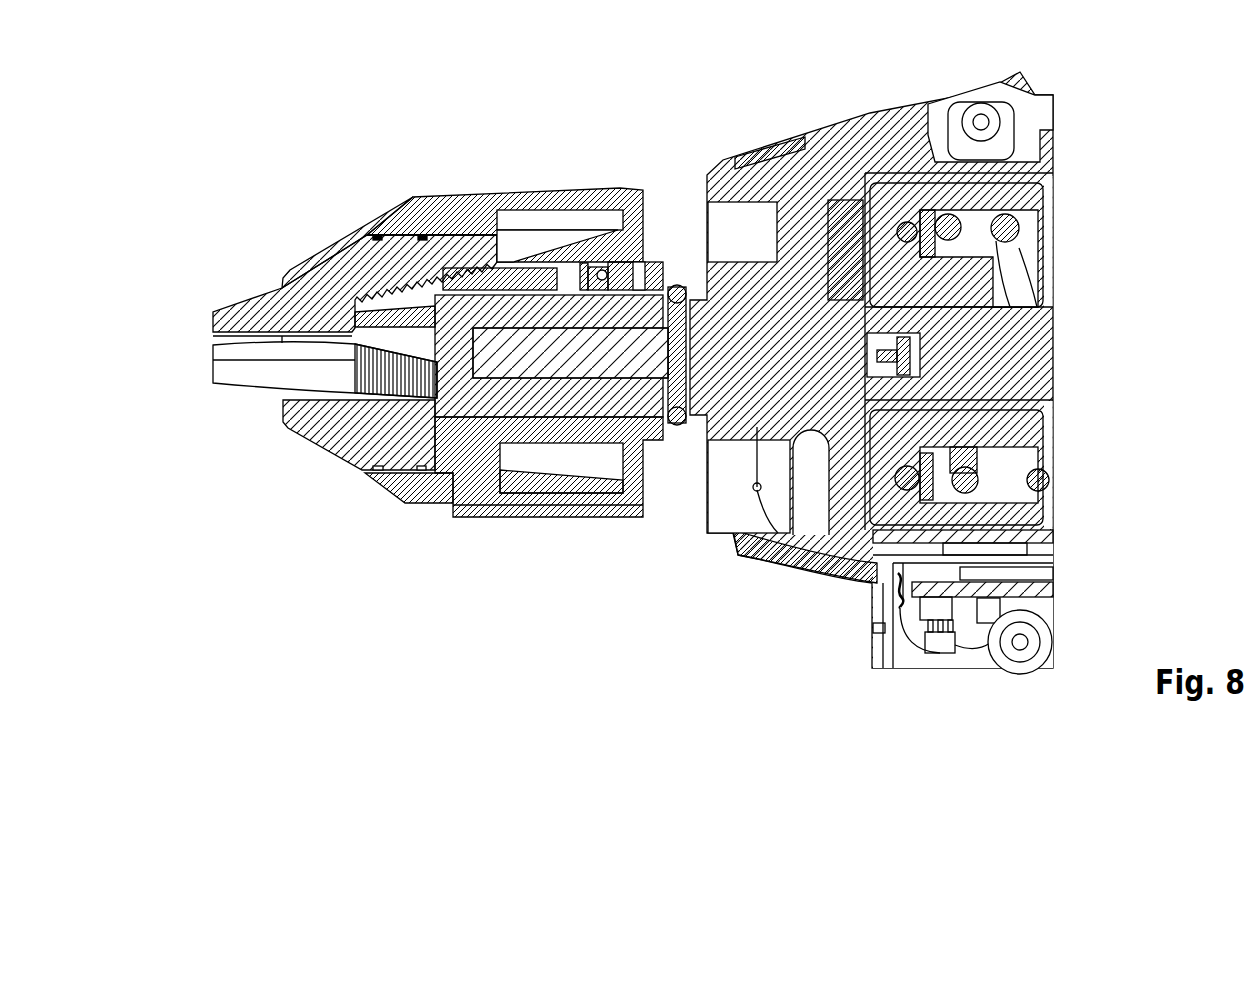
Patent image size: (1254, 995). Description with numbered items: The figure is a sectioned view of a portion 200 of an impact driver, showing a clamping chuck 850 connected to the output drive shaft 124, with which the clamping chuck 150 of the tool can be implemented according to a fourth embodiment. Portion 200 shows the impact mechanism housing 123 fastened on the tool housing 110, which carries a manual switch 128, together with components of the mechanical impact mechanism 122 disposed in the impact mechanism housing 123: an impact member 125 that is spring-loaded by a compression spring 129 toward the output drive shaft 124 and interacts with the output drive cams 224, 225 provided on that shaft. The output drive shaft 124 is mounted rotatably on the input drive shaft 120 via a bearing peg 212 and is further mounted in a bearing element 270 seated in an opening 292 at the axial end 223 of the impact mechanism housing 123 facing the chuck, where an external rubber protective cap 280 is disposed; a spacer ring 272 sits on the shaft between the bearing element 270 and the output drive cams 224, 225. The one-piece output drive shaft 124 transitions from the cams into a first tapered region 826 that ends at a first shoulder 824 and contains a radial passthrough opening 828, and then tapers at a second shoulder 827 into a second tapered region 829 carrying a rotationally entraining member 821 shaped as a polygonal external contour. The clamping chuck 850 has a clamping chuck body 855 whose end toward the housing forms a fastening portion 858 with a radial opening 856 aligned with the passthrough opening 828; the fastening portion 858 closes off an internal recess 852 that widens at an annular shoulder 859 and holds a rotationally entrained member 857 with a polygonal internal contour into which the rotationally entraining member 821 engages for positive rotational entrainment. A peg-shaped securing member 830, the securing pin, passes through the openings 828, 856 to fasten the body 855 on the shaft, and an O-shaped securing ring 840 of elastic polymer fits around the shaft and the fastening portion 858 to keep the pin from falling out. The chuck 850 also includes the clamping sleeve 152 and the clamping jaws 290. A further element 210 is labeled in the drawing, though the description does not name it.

The portion 200 is at (146, 84).
The clamping chuck 150 is at (275, 240).
The clamping chuck 850 is at (322, 437).
The tool housing 110 is at (1017, 110).
The input drive shaft 120 is at (1040, 342).
The impact mechanism 122 is at (1078, 172).
The impact mechanism housing 123 is at (897, 120).
The output drive shaft 124 is at (790, 313).
The impact member 125 is at (1040, 195).
The manual switch 128 is at (878, 630).
The compression spring 129 is at (1040, 442).
The clamping sleeve 152 is at (505, 285).
The screw 210 is at (693, 358).
The bearing peg 212 is at (920, 355).
The axial end 223 is at (683, 425).
The output drive cam 224 is at (880, 130).
The output drive cam 225 is at (843, 483).
The bearing element 270 is at (797, 277).
The spacer ring 272 is at (800, 490).
The rubber protective cap 280 is at (782, 157).
The clamping jaws 290 is at (213, 352).
The opening 292 is at (755, 500).
The rotationally entraining member 821 is at (557, 367).
The first shoulder 824 is at (700, 523).
The first tapered region 826 is at (880, 345).
The second shoulder 827 is at (660, 395).
The radial passthrough opening 828 is at (880, 460).
The second tapered region 829 is at (528, 380).
The securing member 830 is at (610, 290).
The securing ring 840 is at (667, 296).
The internal recess 852 is at (478, 335).
The clamping chuck body 855 is at (348, 443).
The radial opening 856 is at (653, 300).
The rotationally entrained member 857 is at (478, 363).
The fastening portion 858 is at (692, 303).
The annular shoulder 859 is at (557, 290).